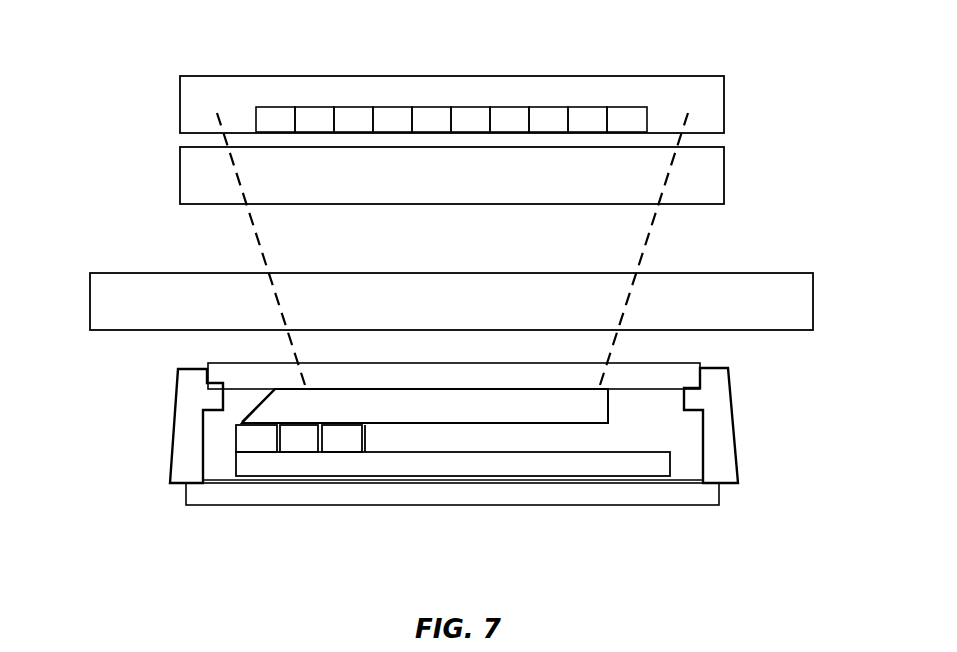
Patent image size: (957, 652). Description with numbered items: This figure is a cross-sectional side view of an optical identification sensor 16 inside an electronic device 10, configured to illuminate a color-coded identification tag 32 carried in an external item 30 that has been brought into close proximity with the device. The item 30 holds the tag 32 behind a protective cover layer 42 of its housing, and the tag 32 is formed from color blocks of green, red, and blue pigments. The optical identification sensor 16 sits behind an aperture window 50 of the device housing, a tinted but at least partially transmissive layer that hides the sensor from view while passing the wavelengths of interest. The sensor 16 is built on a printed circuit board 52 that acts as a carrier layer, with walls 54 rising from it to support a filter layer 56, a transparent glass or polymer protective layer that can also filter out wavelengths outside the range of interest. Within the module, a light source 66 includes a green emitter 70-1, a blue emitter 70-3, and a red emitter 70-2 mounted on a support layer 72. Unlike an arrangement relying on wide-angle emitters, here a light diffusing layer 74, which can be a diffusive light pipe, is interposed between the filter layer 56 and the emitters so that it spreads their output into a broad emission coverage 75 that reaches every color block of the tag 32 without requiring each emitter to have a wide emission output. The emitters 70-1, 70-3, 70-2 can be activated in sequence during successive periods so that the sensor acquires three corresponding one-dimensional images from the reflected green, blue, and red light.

The electronic device 10 is at (496, 421).
The optical identification sensor 16 is at (157, 428).
The item 30 is at (538, 122).
The identification tag 32 is at (638, 98).
The protective cover layer 42 is at (481, 175).
The aperture window 50 is at (75, 273).
The printed circuit board 52 is at (657, 505).
The walls 54 is at (732, 395).
The filter layer 56 is at (693, 371).
The light source 66 is at (243, 404).
The green emitter 70-1 is at (249, 452).
The red emitter 70-2 is at (343, 452).
The blue emitter 70-3 is at (298, 452).
The support layer 72 is at (662, 464).
The light diffusing layer 74 is at (602, 407).
The emission coverage 75 is at (648, 233).